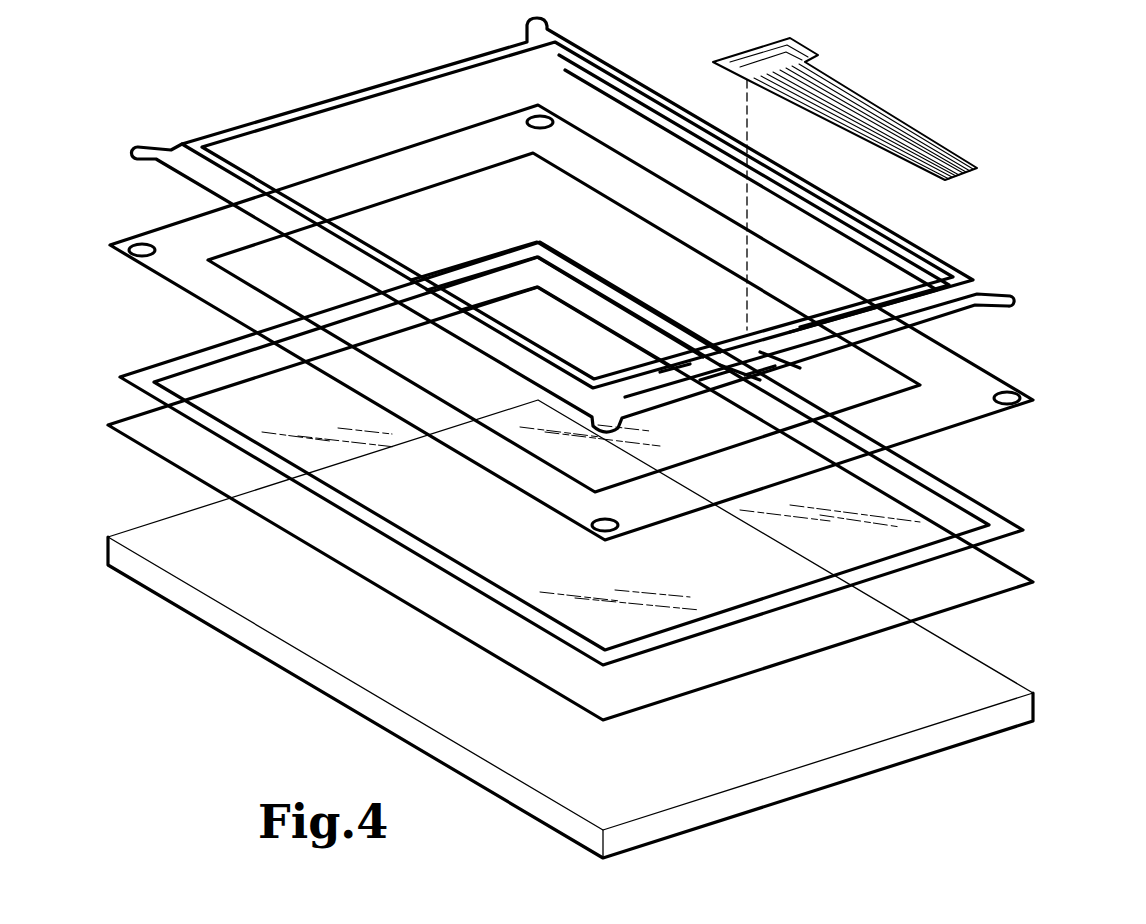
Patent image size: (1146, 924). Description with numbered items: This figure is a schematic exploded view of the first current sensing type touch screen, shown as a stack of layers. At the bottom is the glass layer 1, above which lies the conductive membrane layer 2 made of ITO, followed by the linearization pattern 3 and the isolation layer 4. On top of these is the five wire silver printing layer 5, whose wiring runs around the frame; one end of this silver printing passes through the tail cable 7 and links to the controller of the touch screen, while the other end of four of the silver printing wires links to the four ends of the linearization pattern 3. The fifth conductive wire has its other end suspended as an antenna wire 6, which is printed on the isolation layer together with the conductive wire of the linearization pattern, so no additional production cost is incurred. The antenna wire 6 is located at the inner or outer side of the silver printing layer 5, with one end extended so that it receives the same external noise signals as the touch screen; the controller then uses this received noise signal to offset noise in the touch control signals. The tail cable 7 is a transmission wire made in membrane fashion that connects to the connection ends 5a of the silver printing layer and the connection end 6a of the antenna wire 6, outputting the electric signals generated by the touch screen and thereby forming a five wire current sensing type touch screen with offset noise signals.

The glass layer 1 is at (1000, 718).
The conductive membrane layer 2 is at (990, 575).
The linearization pattern 3 is at (1007, 523).
The isolation layer 4 is at (965, 400).
The five wire silver printing layer 5 is at (1000, 290).
The connection ends of the silver printing layer 5a is at (862, 356).
The antenna wire 6 is at (293, 110).
The connection end of the antenna wire 6a is at (800, 355).
The tail cable 7 is at (870, 108).